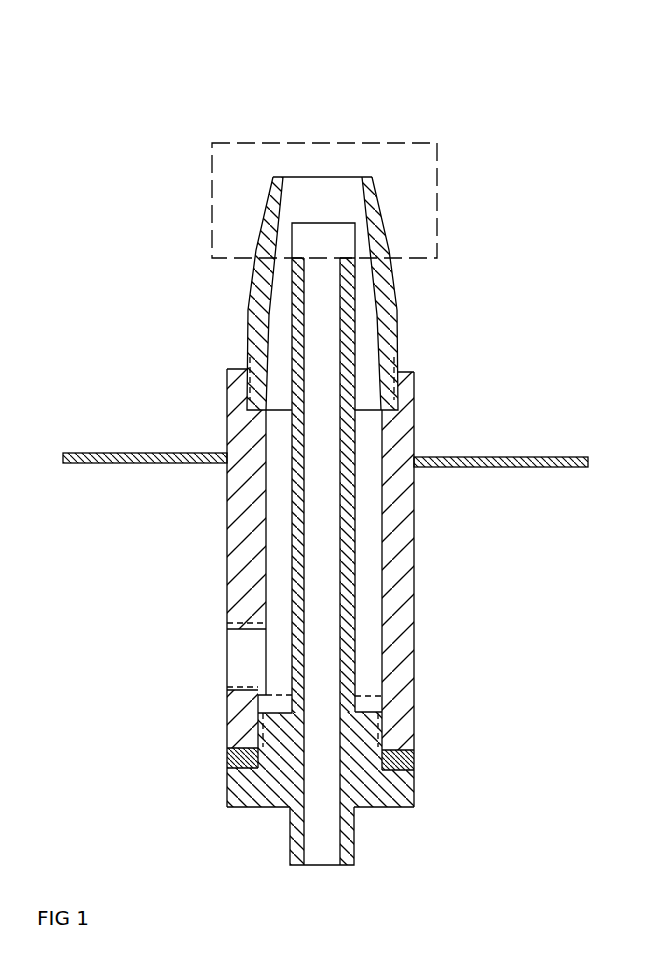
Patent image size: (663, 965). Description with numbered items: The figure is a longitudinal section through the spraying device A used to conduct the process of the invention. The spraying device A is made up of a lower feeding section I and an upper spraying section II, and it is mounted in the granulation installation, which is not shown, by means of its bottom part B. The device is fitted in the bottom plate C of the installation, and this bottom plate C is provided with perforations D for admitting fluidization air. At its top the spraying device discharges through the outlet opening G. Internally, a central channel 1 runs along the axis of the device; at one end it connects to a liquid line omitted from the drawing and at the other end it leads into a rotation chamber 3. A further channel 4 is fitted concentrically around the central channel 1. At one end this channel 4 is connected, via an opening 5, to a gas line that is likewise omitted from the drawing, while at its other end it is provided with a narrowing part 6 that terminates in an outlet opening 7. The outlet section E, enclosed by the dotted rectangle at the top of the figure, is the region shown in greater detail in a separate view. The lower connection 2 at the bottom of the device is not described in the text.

The central channel 1 is at (337, 707).
The lower stub connection 2 is at (325, 855).
The rotation chamber 3 is at (343, 254).
The channel 4 is at (363, 560).
The opening 5 is at (243, 647).
The narrowing part 6 is at (368, 361).
The outlet opening 7 is at (360, 233).
The spraying device A is at (227, 595).
The bottom part B is at (398, 795).
The bottom plate C is at (508, 457).
The perforations D is at (490, 467).
The outlet section E is at (417, 156).
The outlet opening G is at (346, 177).
The feeding section I is at (243, 614).
The spraying section II is at (258, 317).